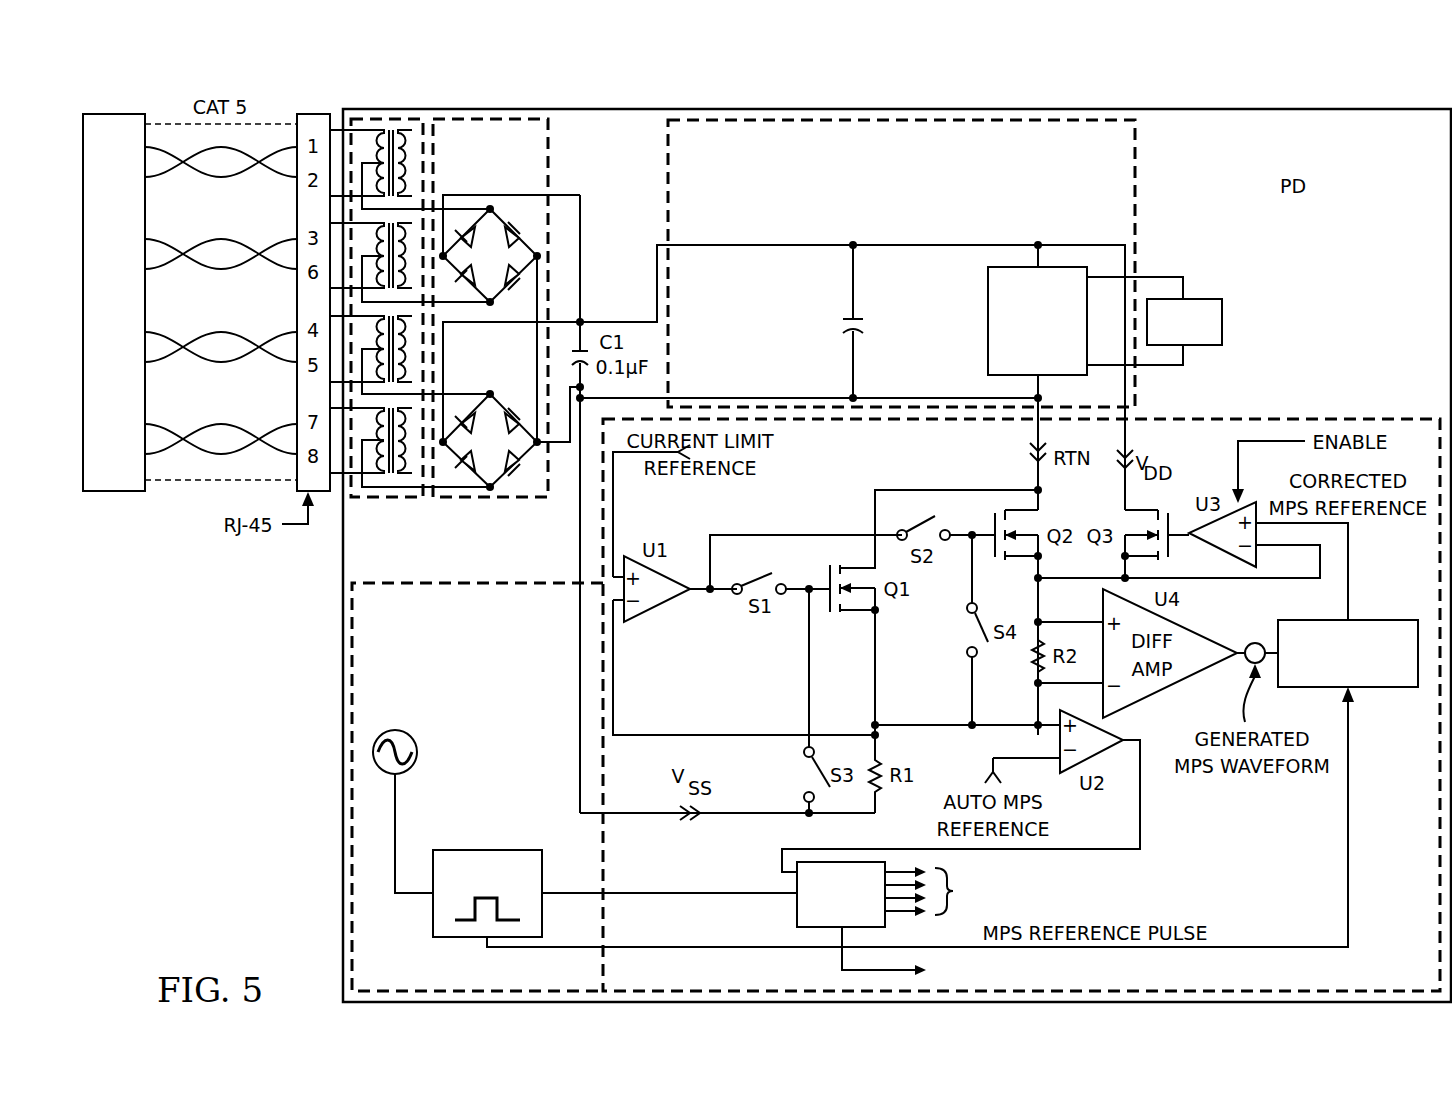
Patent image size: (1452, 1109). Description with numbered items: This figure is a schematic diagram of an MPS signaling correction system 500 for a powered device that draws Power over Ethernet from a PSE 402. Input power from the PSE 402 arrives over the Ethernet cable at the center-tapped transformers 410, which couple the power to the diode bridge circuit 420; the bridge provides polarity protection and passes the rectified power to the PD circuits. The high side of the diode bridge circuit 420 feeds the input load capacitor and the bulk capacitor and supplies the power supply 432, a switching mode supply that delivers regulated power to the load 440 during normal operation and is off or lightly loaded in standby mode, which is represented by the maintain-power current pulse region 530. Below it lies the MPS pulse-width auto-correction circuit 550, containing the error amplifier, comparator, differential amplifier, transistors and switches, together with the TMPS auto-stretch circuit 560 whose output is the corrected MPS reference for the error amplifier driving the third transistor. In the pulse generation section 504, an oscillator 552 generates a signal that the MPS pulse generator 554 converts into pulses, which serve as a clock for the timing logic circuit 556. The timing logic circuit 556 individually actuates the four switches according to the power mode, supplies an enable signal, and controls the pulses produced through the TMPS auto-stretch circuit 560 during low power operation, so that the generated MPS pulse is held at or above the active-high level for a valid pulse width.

The PSE 402 is at (113, 492).
The center-tapped transformers 410 is at (387, 512).
The diode bridge circuit 420 is at (491, 512).
The power supply 432 is at (988, 322).
The load 440 is at (1210, 299).
The MPS signaling correction system 500 is at (188, 812).
The MPS pulse generation and timing section 504 is at (342, 750).
The maintain power current pulse / standby mode section 530 is at (1143, 170).
The MPS pulse-width auto-correction circuit 550 is at (1203, 410).
The oscillator OSC1 552 is at (418, 752).
The MPS pulse generator 554 is at (542, 915).
The timing logic circuit 556 is at (797, 900).
The TMPS auto-stretch circuit 560 is at (1382, 690).